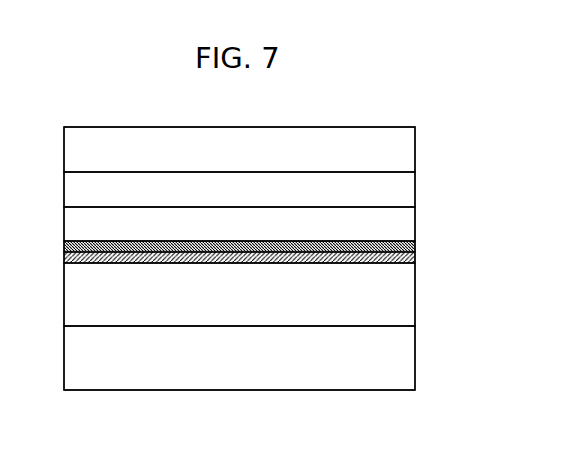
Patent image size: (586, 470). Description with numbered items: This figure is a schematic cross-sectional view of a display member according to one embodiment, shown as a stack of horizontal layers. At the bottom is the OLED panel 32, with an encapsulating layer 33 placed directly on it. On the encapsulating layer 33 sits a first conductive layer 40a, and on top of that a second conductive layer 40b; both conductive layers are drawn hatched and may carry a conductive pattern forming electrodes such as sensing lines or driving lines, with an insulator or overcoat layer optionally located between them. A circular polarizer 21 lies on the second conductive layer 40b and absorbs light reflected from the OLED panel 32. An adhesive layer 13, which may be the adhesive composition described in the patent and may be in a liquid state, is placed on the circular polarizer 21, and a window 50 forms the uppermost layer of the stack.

The window 50 is at (408, 151).
The adhesive layer 13 is at (408, 191).
The circular polarizer 21 is at (408, 225).
The second conductive layer 40b is at (408, 245).
The first conductive layer 40a is at (408, 258).
The encapsulating layer 33 is at (408, 290).
The OLED panel 32 is at (408, 353).